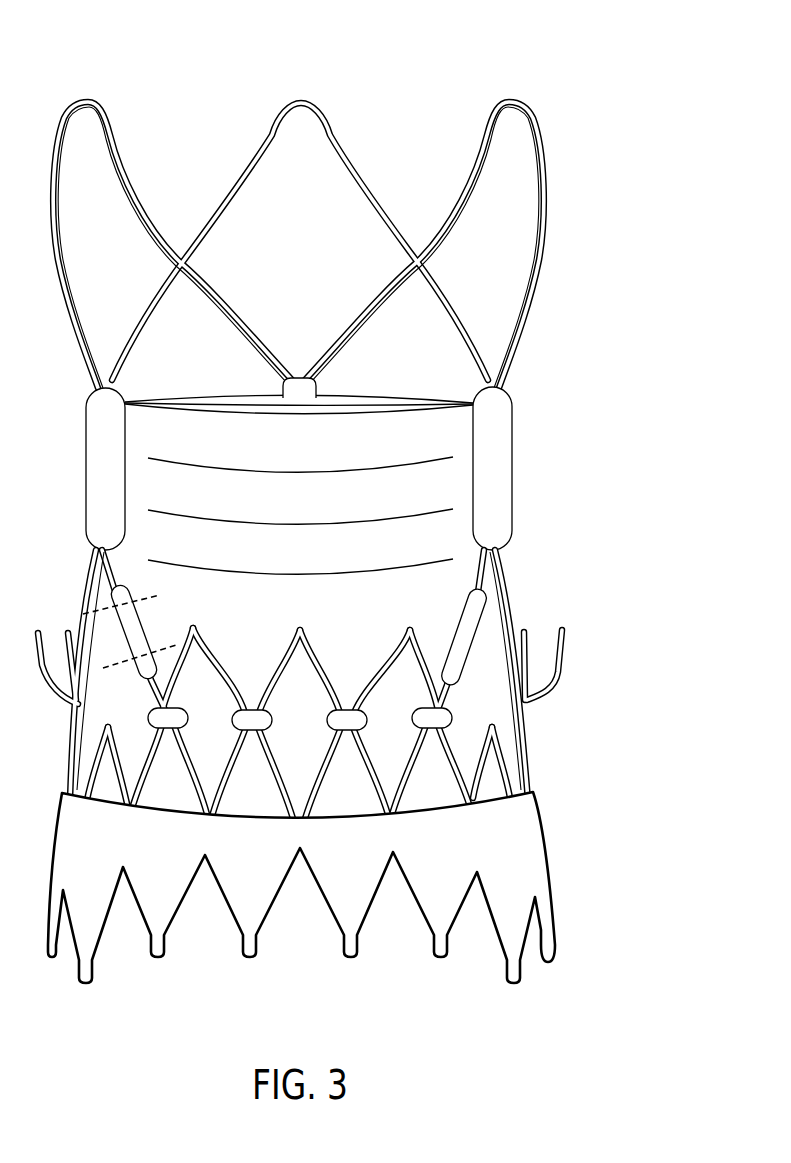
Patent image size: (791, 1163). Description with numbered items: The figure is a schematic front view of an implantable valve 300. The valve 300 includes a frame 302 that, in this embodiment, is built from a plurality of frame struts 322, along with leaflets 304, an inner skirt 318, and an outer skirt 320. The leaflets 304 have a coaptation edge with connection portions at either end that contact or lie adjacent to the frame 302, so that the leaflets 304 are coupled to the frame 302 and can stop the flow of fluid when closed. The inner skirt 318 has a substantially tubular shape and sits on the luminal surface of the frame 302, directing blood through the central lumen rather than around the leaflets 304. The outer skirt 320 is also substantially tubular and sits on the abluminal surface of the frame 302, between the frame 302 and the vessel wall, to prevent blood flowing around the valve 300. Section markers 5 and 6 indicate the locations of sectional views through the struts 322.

The implantable valve 300 is at (422, 95).
The frame 302 is at (537, 290).
The leaflets 304 is at (377, 405).
The inner skirt 318 is at (492, 668).
The outer skirt 320 is at (525, 855).
The frame struts 322 is at (485, 575).
The section line 5-5' 5 is at (115, 583).
The section line 6-6' 6 is at (134, 636).